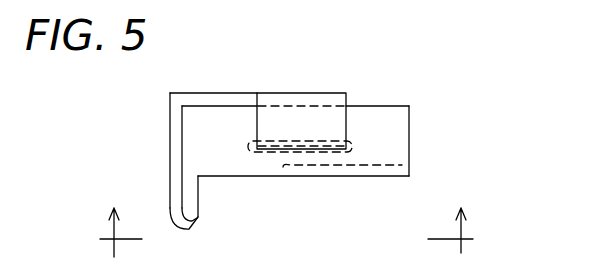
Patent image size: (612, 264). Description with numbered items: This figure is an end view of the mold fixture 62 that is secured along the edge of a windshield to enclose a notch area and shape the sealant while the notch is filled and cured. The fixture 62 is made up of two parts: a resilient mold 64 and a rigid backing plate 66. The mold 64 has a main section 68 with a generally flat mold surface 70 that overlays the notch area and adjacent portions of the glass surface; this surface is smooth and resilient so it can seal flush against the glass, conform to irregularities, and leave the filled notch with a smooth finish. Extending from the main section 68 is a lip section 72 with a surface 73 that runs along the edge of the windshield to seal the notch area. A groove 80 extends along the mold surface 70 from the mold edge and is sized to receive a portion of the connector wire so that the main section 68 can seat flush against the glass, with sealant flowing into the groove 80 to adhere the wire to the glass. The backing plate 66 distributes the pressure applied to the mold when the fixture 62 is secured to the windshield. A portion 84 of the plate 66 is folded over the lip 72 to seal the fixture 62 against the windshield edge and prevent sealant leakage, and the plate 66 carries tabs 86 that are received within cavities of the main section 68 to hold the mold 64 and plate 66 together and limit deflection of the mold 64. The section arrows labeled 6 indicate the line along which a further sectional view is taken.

The mold fixture 62 is at (142, 88).
The resilient mold 64 is at (412, 115).
The rigid backing plate 66 is at (235, 93).
The main section 68 is at (388, 106).
The mold surface 70 is at (233, 178).
The lip section 72 is at (181, 162).
The lip surface 73 is at (200, 190).
The groove 80 is at (382, 165).
The folded portion of plate 84 is at (170, 114).
The tabs 86 is at (347, 118).
The section line 6- 6 is at (286, 213).